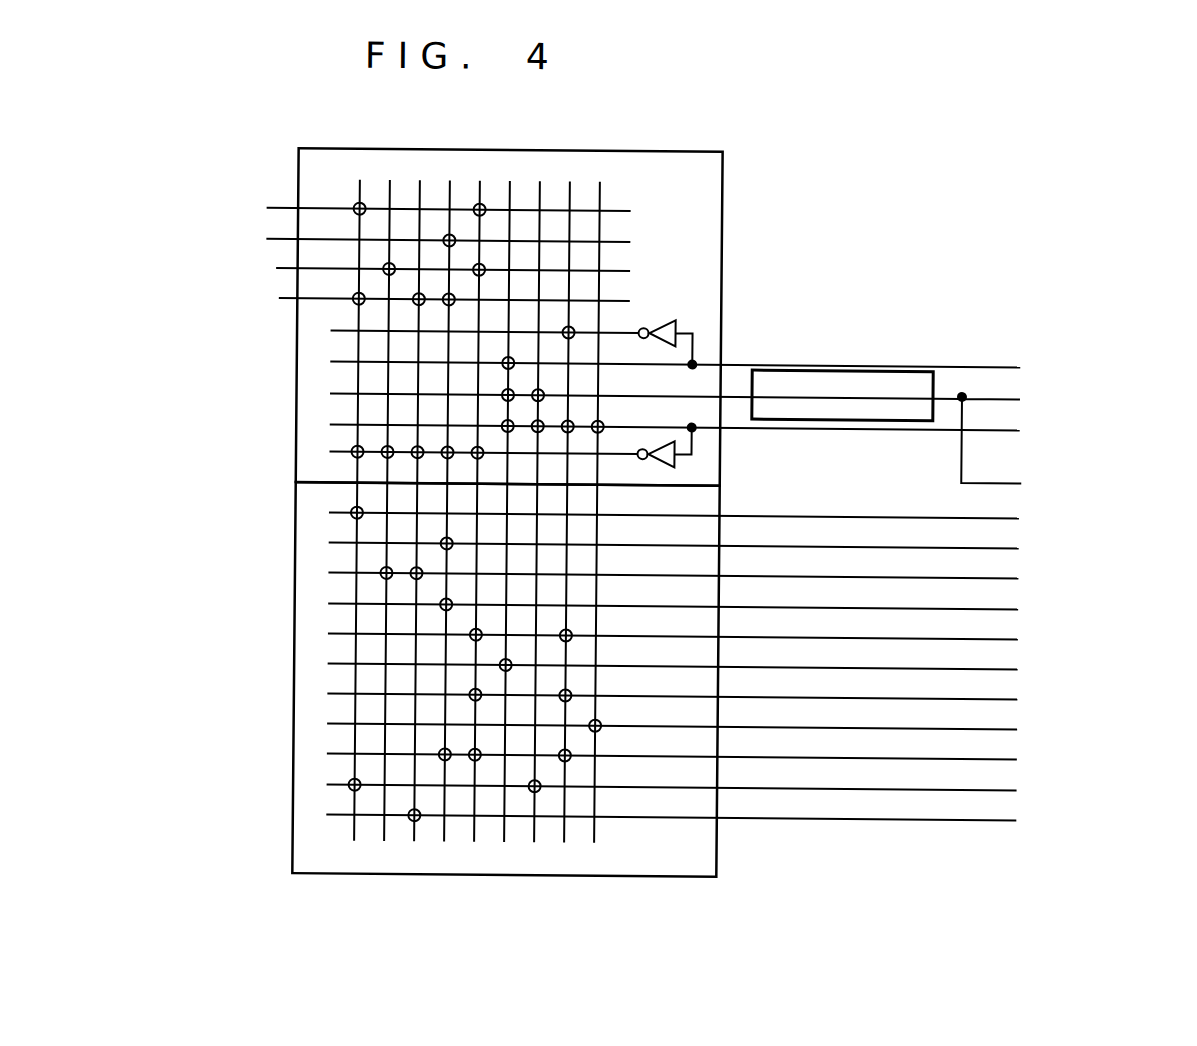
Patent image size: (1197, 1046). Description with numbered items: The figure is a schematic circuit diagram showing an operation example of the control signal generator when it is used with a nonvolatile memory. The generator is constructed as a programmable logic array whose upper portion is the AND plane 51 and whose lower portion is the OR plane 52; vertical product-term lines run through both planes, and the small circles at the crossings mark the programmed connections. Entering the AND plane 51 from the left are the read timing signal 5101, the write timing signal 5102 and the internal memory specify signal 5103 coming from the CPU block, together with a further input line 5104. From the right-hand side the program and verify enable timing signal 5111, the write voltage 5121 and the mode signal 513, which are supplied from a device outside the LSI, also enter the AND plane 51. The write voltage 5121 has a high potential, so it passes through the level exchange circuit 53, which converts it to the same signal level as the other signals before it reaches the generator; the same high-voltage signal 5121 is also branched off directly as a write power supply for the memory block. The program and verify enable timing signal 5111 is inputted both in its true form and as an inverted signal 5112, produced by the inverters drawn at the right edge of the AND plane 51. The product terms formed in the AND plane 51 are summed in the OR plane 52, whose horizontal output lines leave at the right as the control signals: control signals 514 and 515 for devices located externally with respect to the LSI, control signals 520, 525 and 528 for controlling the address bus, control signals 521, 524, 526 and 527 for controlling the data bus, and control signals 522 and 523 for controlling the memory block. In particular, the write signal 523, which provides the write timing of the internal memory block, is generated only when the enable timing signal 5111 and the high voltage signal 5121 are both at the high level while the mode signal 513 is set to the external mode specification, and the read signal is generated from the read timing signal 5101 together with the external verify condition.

The AND plane 51 is at (720, 208).
The OR plane 52 is at (295, 667).
The level exchange circuit 53 is at (857, 368).
The read timing signal 5101 is at (372, 212).
The write timing signal 5102 is at (372, 242).
The internal memory specify signal 5103 is at (371, 271).
The input line Ext.M 5104 is at (371, 300).
The program and verify enable timing signal 5111 is at (745, 367).
The inverted signal 5112 is at (641, 323).
The write voltage 5121 is at (744, 441).
The mode signal 513 is at (753, 430).
The control signal 514 is at (747, 518).
The control signal 515 is at (750, 548).
The control signal 520 is at (706, 578).
The control signal 521 is at (706, 609).
The control signal 522 is at (746, 639).
The write signal 523 is at (748, 669).
The control signal 524 is at (705, 699).
The control signal 525 is at (705, 729).
The control signal 526 is at (705, 759).
The control signal 527 is at (704, 790).
The control signal 528 is at (704, 820).